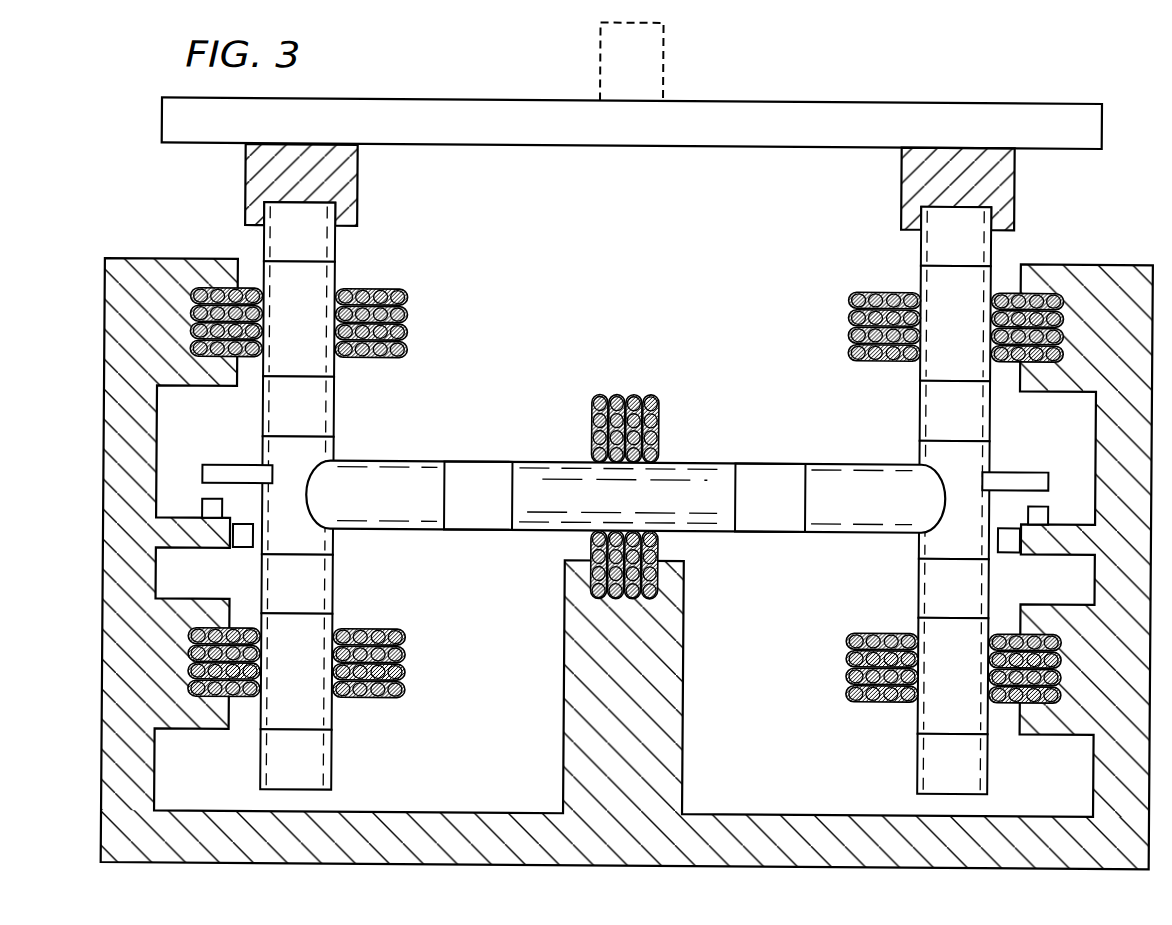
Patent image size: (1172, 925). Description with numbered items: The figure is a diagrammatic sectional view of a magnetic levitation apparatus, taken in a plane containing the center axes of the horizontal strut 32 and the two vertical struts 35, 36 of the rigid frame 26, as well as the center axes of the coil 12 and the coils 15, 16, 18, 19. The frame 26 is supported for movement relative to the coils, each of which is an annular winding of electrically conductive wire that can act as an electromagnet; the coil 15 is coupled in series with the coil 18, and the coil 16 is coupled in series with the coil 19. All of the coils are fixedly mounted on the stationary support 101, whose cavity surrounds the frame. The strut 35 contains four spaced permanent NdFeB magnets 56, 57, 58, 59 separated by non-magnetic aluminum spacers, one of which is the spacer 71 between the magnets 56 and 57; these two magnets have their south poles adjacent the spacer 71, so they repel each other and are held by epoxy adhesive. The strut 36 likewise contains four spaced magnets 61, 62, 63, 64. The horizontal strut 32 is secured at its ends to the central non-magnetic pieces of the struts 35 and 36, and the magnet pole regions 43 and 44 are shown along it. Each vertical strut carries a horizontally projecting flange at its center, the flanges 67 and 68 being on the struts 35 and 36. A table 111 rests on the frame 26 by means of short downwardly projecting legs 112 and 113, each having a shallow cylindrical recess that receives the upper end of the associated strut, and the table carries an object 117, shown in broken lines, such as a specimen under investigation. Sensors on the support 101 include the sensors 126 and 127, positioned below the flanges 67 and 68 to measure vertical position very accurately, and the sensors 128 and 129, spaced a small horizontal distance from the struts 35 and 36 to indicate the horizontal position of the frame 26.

The annular coil 12 is at (640, 391).
The annular coil 15 is at (410, 312).
The annular coil 16 is at (850, 314).
The annular coil 18 is at (410, 677).
The annular coil 19 is at (850, 677).
The rigid frame 26 is at (626, 469).
The strut 32 is at (692, 459).
The strut 35 is at (336, 541).
The strut 36 is at (921, 544).
The left shaft magnet 43 is at (450, 459).
The right shaft magnet 44 is at (772, 459).
The permanent NdFeB magnet 56 is at (338, 250).
The permanent NdFeB magnet 57 is at (338, 407).
The permanent NdFeB magnet 58 is at (336, 585).
The permanent NdFeB magnet 59 is at (334, 758).
The permanent NdFeB magnet 61 is at (921, 256).
The permanent NdFeB magnet 62 is at (921, 411).
The permanent NdFeB magnet 63 is at (921, 588).
The permanent NdFeB magnet 64 is at (921, 763).
The flange 67 is at (226, 464).
The flange 68 is at (1030, 466).
The non-magnetic aluminum spacer 71 is at (338, 283).
The stationary support 101 is at (106, 546).
The table 111 is at (162, 120).
The leg 112 is at (246, 186).
The leg 113 is at (1015, 206).
The object 117 is at (600, 60).
The sensor 126 is at (207, 501).
The sensor 127 is at (1051, 510).
The sensor 128 is at (247, 547).
The sensor 129 is at (1010, 546).